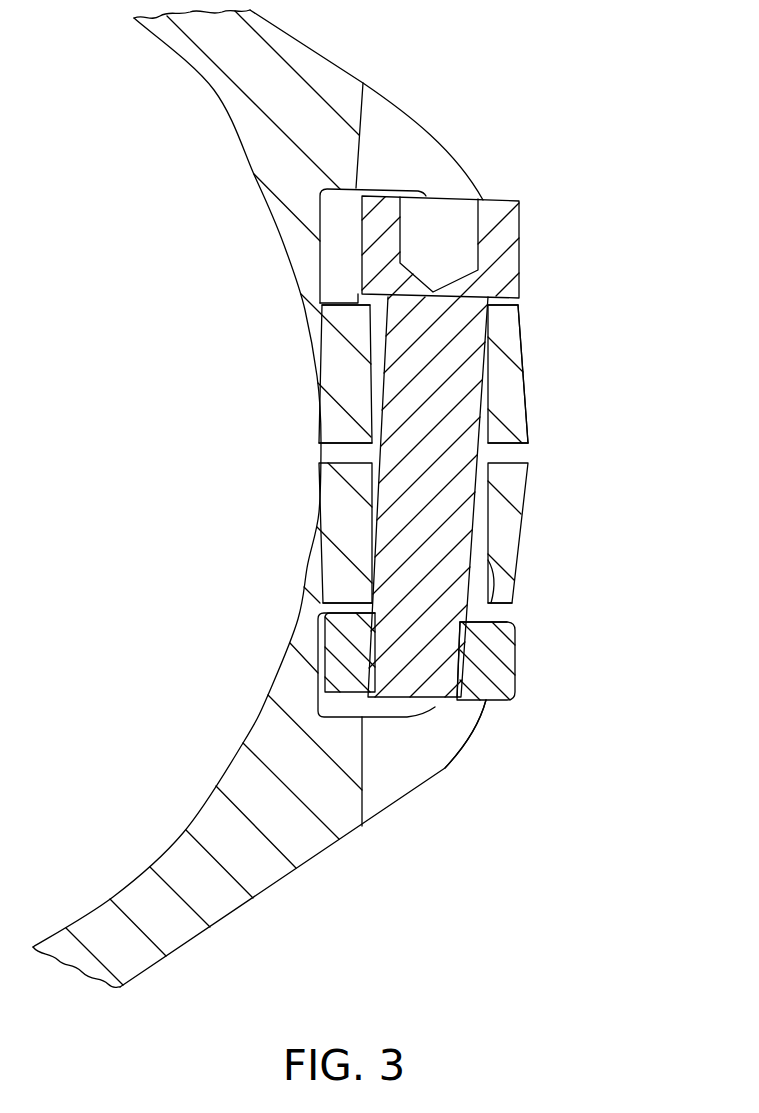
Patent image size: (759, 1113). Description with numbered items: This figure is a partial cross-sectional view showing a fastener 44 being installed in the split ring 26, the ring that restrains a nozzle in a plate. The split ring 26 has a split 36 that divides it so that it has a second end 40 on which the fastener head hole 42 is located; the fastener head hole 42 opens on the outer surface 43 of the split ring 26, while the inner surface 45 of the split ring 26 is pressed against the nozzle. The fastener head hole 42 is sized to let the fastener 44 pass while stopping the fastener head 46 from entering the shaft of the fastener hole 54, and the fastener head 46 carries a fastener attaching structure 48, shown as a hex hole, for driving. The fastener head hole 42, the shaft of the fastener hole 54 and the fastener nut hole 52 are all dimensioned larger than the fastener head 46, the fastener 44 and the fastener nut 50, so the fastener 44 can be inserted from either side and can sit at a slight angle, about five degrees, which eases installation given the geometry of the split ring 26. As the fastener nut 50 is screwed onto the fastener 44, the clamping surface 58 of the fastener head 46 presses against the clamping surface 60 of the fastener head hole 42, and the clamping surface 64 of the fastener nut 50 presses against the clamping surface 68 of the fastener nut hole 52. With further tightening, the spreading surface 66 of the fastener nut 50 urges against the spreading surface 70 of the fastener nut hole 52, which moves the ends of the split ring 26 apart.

The split ring 26 is at (291, 829).
The split 36 is at (538, 453).
The second end 40 is at (519, 350).
The fastener head hole 42 is at (398, 185).
The outer surface 43 is at (530, 488).
The fastener 44 is at (453, 347).
The inner surface 45 is at (324, 500).
The fastener head 46 is at (503, 243).
The fastener attaching structure 48 is at (452, 218).
The fastener nut 50 is at (495, 680).
The fastener nut hole 52 is at (522, 616).
The shaft of the fastener hole 54 is at (490, 398).
The clamping surface 58 is at (370, 318).
The clamping surface 60 is at (517, 313).
The clamping surface 64 is at (510, 588).
The spreading surface 66 is at (363, 718).
The clamping surface 68 is at (492, 603).
The spreading surface 70 is at (340, 717).